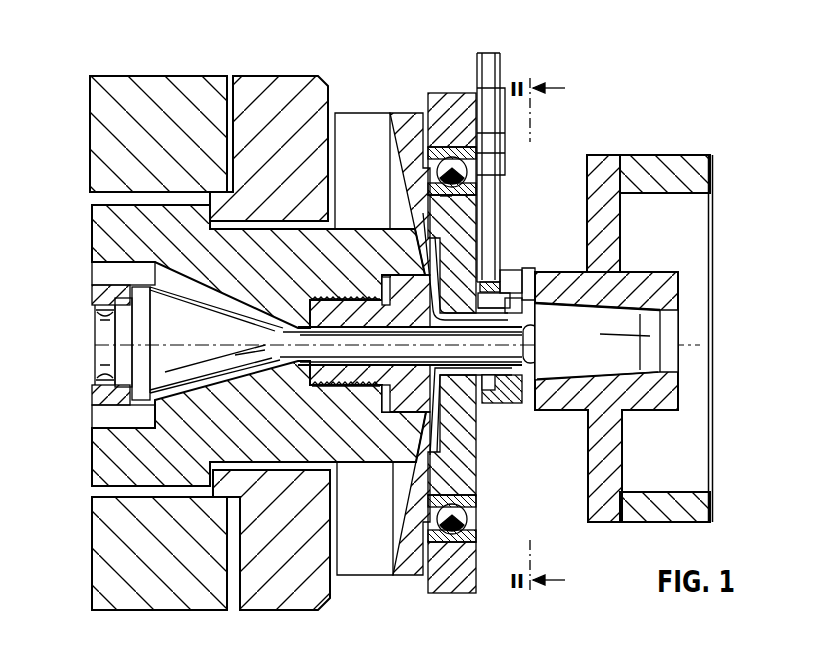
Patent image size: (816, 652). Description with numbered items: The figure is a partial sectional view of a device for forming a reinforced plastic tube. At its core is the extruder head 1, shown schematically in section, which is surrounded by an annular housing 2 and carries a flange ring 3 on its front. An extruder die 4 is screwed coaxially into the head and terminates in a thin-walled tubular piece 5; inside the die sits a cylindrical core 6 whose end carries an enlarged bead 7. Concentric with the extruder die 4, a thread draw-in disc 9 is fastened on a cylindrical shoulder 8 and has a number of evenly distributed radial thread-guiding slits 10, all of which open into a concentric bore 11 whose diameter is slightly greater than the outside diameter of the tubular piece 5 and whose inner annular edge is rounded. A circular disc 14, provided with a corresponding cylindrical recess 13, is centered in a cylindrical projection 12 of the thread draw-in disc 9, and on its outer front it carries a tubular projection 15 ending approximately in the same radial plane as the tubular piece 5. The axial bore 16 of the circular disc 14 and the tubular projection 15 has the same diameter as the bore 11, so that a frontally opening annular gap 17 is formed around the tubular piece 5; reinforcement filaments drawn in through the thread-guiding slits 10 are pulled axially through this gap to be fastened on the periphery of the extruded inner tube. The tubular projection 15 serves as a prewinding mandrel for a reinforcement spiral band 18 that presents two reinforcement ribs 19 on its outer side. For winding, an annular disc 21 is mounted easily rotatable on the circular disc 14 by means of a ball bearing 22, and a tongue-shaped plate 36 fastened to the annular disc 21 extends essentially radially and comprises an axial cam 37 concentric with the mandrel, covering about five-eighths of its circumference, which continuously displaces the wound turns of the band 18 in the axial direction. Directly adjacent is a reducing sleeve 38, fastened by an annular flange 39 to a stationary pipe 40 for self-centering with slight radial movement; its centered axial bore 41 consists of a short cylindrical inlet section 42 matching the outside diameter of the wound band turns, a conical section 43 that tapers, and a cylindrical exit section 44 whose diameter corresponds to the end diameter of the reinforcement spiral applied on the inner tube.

The extruder head 1 is at (150, 465).
The annular housing 2 is at (155, 575).
The flange ring 3 is at (313, 108).
The extruder die 4 is at (385, 435).
The tubular piece 5 is at (531, 372).
The cylindrical core 6 is at (540, 350).
The enlarged bead 7 is at (538, 334).
The cylindrical shoulder 8 is at (349, 465).
The thread draw-in disc 9 is at (416, 560).
The thread-guiding slits 10 is at (365, 130).
The concentric bore 11 is at (492, 259).
The cylindrical projection 12 is at (440, 200).
The cylindrical recess 13 is at (452, 462).
The circular disc 14 is at (467, 482).
The tubular projection 15 is at (524, 408).
The axial bore 16 is at (502, 405).
The annular gap 17 is at (521, 391).
The reinforcement spiral band 18 is at (488, 196).
The reinforcement ribs 19 is at (497, 232).
The annular disc 21 is at (458, 575).
The ball bearing 22 is at (478, 530).
The tongue-shaped plate 36 is at (522, 297).
The axial cam 37 is at (620, 274).
The reducing sleeve 38 is at (655, 405).
The annular flange 39 is at (603, 470).
The stationary pipe 40 is at (664, 165).
The axial bore 41 is at (640, 362).
The inlet-side bore section 42 is at (597, 364).
The conical bore section 43 is at (665, 302).
The exit-side bore section 44 is at (656, 337).